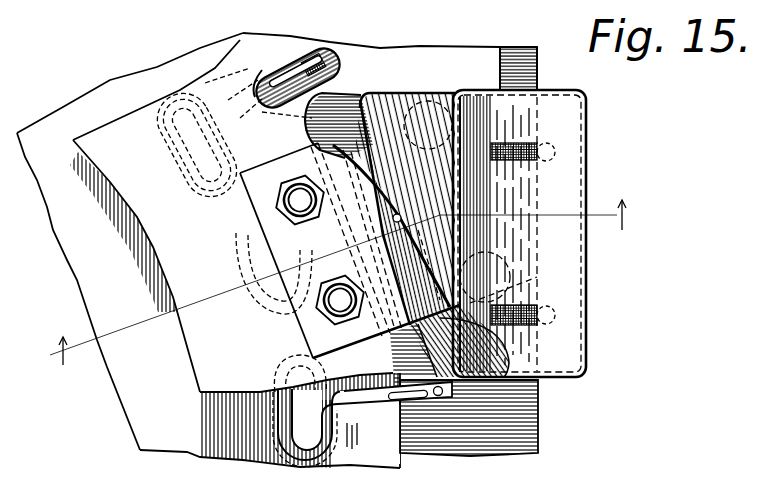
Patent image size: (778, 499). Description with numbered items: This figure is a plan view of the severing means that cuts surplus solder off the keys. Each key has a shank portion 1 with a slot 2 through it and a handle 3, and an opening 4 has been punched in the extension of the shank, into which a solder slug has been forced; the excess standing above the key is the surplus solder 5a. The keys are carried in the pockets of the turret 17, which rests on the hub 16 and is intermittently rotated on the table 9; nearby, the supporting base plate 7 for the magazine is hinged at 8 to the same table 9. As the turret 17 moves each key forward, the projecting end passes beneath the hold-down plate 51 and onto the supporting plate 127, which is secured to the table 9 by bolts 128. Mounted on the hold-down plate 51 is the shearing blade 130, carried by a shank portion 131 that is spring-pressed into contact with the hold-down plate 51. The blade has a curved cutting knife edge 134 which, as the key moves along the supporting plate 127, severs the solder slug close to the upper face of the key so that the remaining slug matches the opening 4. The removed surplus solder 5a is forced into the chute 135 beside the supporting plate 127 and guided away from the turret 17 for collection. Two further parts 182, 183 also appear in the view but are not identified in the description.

The shank portion 1 is at (272, 91).
The slot 2 is at (281, 56).
The handle 3 is at (180, 158).
The opening 4 is at (440, 398).
The surplus solder 5a is at (319, 45).
The supporting base plate 7 is at (380, 403).
The hinge 8 is at (313, 458).
The table 9 is at (538, 424).
The hub 16 is at (343, 286).
The turret 17 is at (258, 250).
The hold-down plate 51 is at (203, 323).
The supporting plate 127 is at (470, 335).
The bolts 128 is at (540, 283).
The shearing blade 130 is at (378, 178).
The shank portion 131 is at (260, 198).
The curved cutting knife edge 134 is at (360, 185).
The chute 135 is at (568, 153).
The nut 182 is at (297, 198).
The nut 183 is at (338, 298).